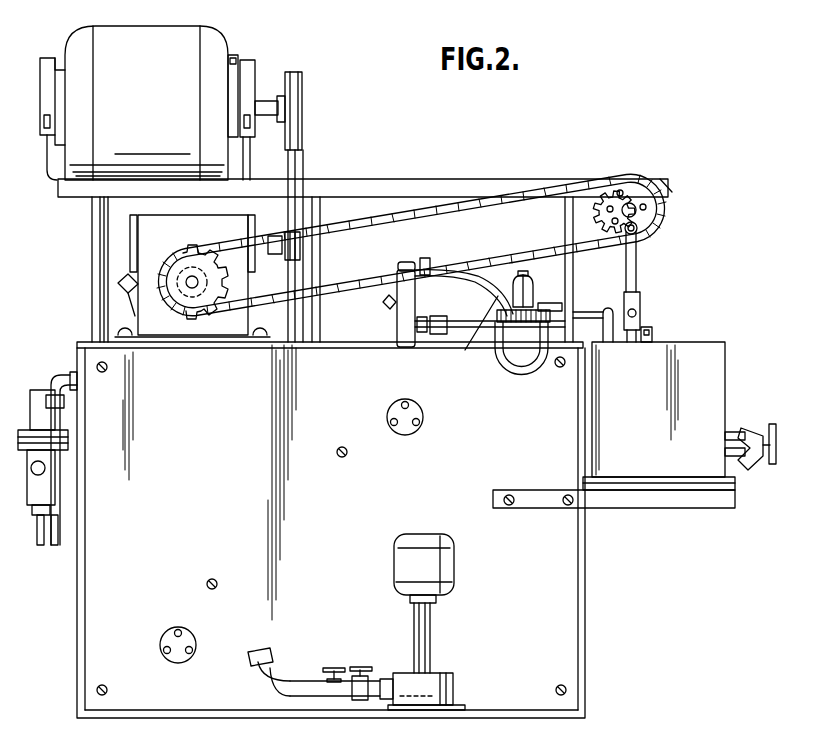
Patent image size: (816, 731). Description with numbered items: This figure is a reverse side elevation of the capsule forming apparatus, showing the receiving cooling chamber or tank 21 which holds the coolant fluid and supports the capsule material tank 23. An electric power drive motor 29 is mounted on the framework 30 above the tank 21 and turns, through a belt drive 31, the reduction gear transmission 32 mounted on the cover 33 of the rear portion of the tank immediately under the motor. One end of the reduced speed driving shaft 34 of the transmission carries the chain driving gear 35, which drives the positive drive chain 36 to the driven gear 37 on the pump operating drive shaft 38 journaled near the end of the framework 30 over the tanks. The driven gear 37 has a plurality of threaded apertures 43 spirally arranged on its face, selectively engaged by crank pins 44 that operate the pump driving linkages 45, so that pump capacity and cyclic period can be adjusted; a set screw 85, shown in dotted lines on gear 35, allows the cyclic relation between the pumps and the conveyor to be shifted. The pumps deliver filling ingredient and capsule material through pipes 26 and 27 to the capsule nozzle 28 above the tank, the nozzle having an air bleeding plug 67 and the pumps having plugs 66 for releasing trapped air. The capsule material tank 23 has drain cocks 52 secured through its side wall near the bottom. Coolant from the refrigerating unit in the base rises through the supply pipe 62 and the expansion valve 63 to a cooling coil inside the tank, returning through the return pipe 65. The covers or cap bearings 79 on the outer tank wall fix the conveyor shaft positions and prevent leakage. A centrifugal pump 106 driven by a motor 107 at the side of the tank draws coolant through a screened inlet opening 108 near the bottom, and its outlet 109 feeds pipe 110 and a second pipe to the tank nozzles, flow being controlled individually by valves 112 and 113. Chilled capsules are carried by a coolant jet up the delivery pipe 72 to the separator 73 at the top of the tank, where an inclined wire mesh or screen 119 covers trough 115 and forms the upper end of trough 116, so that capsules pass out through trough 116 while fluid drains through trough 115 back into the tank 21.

The receiving cooling chamber or tank 21 is at (597, 597).
The capsule material tank 23 is at (722, 378).
The pipe 26 is at (457, 320).
The pipe 27 is at (493, 268).
The capsule nozzle 28 is at (398, 338).
The electric power drive motor 29 is at (180, 40).
The framework 30 is at (372, 188).
The belt drive 31 is at (292, 172).
The reduction gear transmission 32 is at (165, 228).
The cover 33 is at (196, 348).
The reduced speed driving shaft 34 is at (190, 284).
The chain driving gear 35 is at (231, 282).
The positive drive chain 36 is at (520, 186).
The driven gear 37 is at (641, 192).
The pump operating drive shaft 38 is at (634, 212).
The threaded apertures 43 is at (610, 205).
The crank pins 44 is at (640, 232).
The pump driving linkages 45 is at (638, 280).
The drain cocks 52 is at (752, 448).
The supply pipe 62 is at (37, 532).
The expansion valve 63 is at (30, 400).
The return pipe 65 is at (62, 527).
The plugs 66 is at (653, 334).
The air bleeding plug 67 is at (383, 303).
The delivery pipe 72 is at (523, 272).
The separator 73 is at (547, 312).
The covers or cap bearings 79 is at (423, 417).
The set screw 85 is at (250, 282).
The centrifugal pump 106 is at (456, 682).
The motor 107 is at (456, 570).
The screened inlet opening 108 is at (458, 698).
The outlet 109 is at (388, 684).
The pipe 110 is at (280, 684).
The valve 112 is at (363, 668).
The valve 113 is at (335, 668).
The trough 115 is at (520, 366).
The trough 116 is at (466, 350).
The inclined wire mesh or screen 119 is at (545, 300).